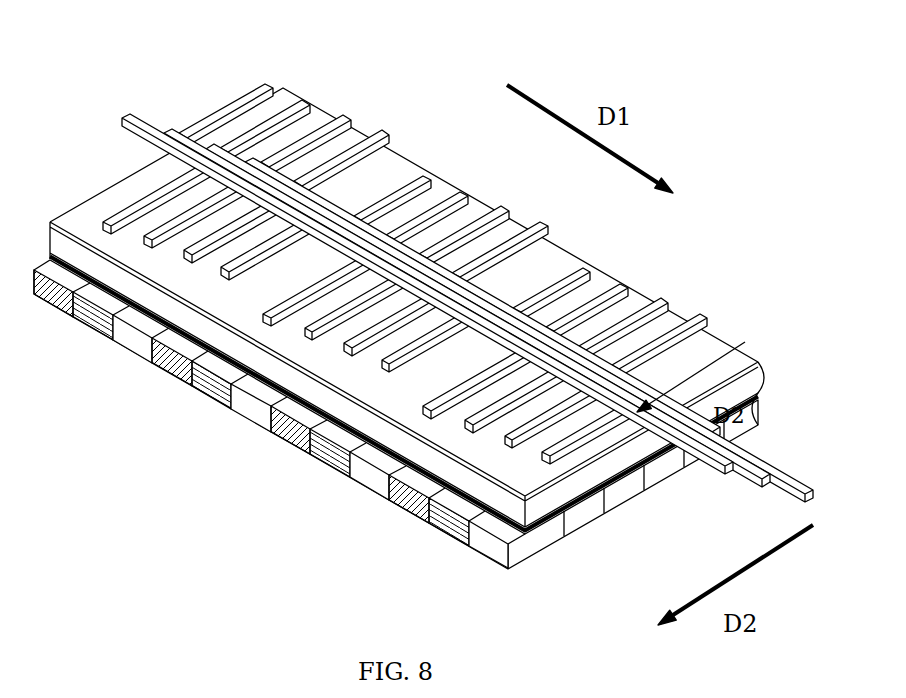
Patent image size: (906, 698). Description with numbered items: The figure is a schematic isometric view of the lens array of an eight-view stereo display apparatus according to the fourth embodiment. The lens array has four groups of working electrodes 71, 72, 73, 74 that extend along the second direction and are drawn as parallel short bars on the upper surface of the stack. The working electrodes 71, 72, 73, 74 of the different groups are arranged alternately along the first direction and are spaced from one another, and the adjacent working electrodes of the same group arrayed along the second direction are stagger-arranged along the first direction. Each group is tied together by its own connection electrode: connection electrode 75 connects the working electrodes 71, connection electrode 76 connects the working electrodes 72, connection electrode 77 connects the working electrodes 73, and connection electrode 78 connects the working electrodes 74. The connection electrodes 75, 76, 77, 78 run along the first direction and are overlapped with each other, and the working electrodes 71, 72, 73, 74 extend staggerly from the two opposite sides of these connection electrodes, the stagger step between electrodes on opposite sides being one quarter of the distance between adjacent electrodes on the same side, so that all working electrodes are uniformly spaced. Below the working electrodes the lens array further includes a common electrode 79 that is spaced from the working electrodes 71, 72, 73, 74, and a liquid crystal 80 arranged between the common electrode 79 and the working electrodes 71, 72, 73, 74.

The working electrode 71 is at (247, 100).
The working electrode 72 is at (305, 108).
The working electrode 73 is at (350, 118).
The working electrode 74 is at (387, 130).
The connection electrode 75 is at (123, 120).
The connection electrode 76 is at (163, 135).
The connection electrode 77 is at (207, 150).
The connection electrode 78 is at (457, 187).
The common electrode 79 is at (650, 460).
The liquid crystal 80 is at (578, 485).